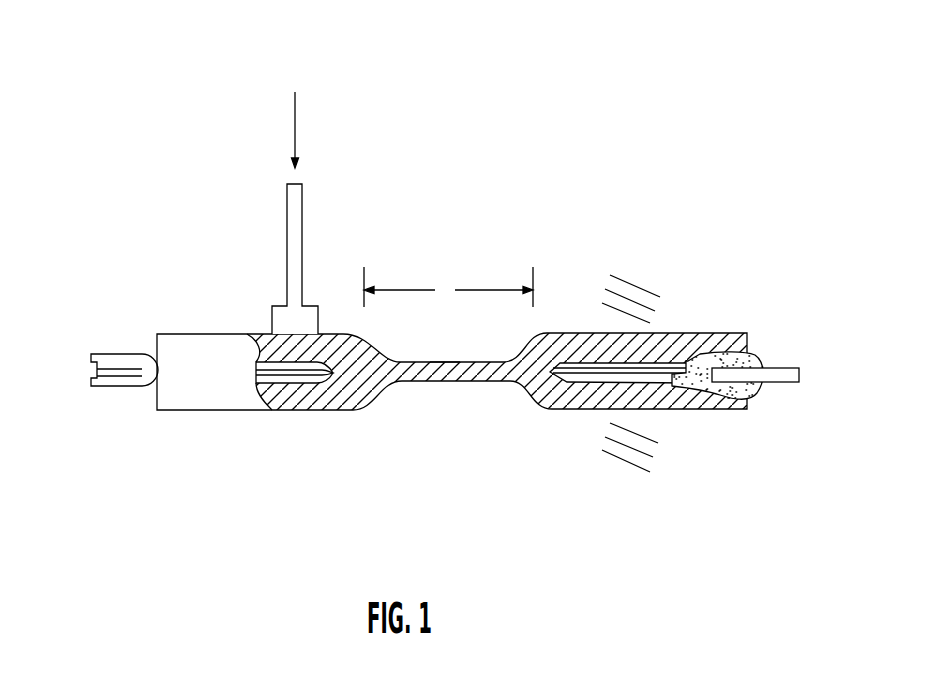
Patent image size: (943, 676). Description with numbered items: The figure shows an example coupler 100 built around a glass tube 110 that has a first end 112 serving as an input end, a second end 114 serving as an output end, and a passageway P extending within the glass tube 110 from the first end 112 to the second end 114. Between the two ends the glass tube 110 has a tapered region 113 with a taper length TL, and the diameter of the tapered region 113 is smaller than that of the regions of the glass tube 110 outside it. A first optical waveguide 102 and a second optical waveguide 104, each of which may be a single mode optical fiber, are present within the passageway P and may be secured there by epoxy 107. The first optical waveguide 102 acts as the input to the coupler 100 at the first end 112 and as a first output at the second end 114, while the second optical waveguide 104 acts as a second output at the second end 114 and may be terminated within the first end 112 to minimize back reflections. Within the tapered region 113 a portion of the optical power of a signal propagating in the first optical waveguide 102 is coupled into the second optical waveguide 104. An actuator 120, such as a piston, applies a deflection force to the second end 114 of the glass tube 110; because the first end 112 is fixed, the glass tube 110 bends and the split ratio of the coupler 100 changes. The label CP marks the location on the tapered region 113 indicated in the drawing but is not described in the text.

The coupler 100 is at (434, 327).
The first optical waveguide 102 is at (110, 355).
The second optical waveguide 104 is at (123, 388).
The epoxy 107 is at (157, 378).
The glass tube 110 is at (228, 333).
The first end 112 is at (700, 410).
The tapered region 113 is at (448, 383).
The second end 114 is at (252, 412).
The actuator 120 is at (268, 245).
The taper length TL is at (448, 288).
The crimp point CP is at (445, 360).
The passageway P is at (563, 362).